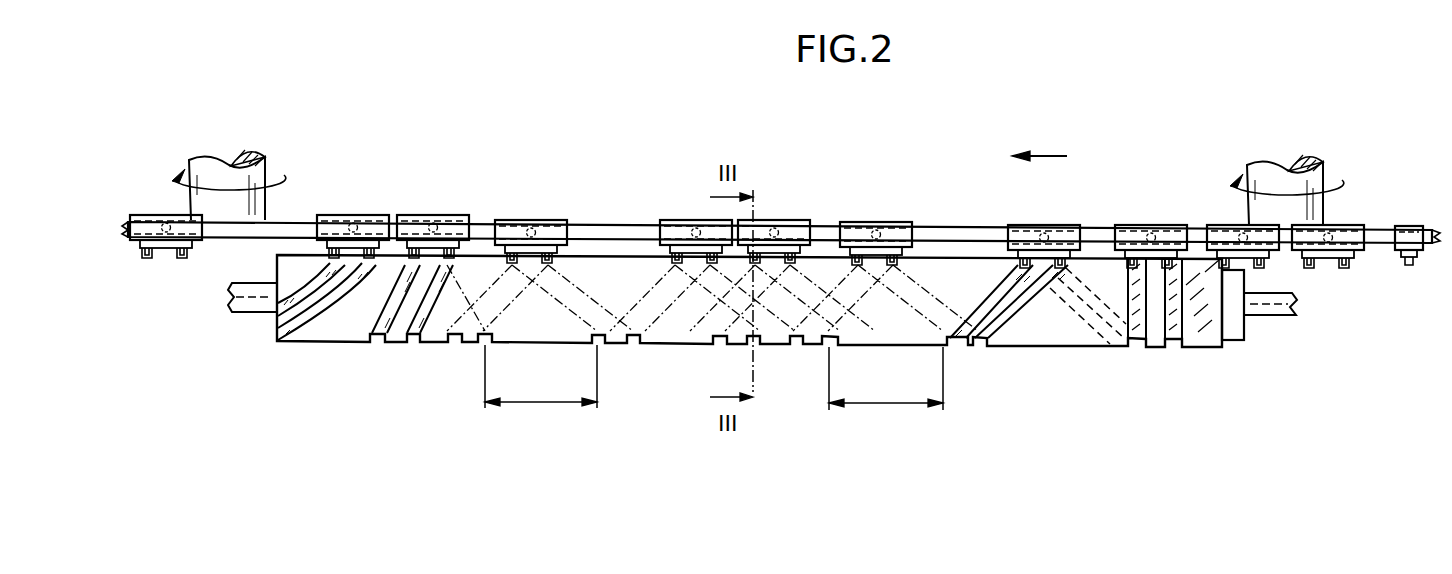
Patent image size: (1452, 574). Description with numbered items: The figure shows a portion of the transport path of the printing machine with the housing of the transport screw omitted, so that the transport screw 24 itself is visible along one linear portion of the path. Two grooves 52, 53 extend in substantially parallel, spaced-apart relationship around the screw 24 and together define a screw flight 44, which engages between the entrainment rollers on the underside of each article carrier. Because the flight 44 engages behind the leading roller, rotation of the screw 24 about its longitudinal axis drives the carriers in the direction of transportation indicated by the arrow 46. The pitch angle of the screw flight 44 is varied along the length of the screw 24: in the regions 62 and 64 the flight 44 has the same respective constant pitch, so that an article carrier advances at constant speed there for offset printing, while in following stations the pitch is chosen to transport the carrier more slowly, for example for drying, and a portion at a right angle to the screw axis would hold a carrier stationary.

The transport screw 24 is at (678, 334).
The screw flight 44 is at (885, 270).
The arrow indicating direction of transportation 46 is at (1052, 152).
The groove 52 is at (302, 290).
The groove 53 is at (308, 322).
The region 62 is at (886, 378).
The region 64 is at (541, 376).